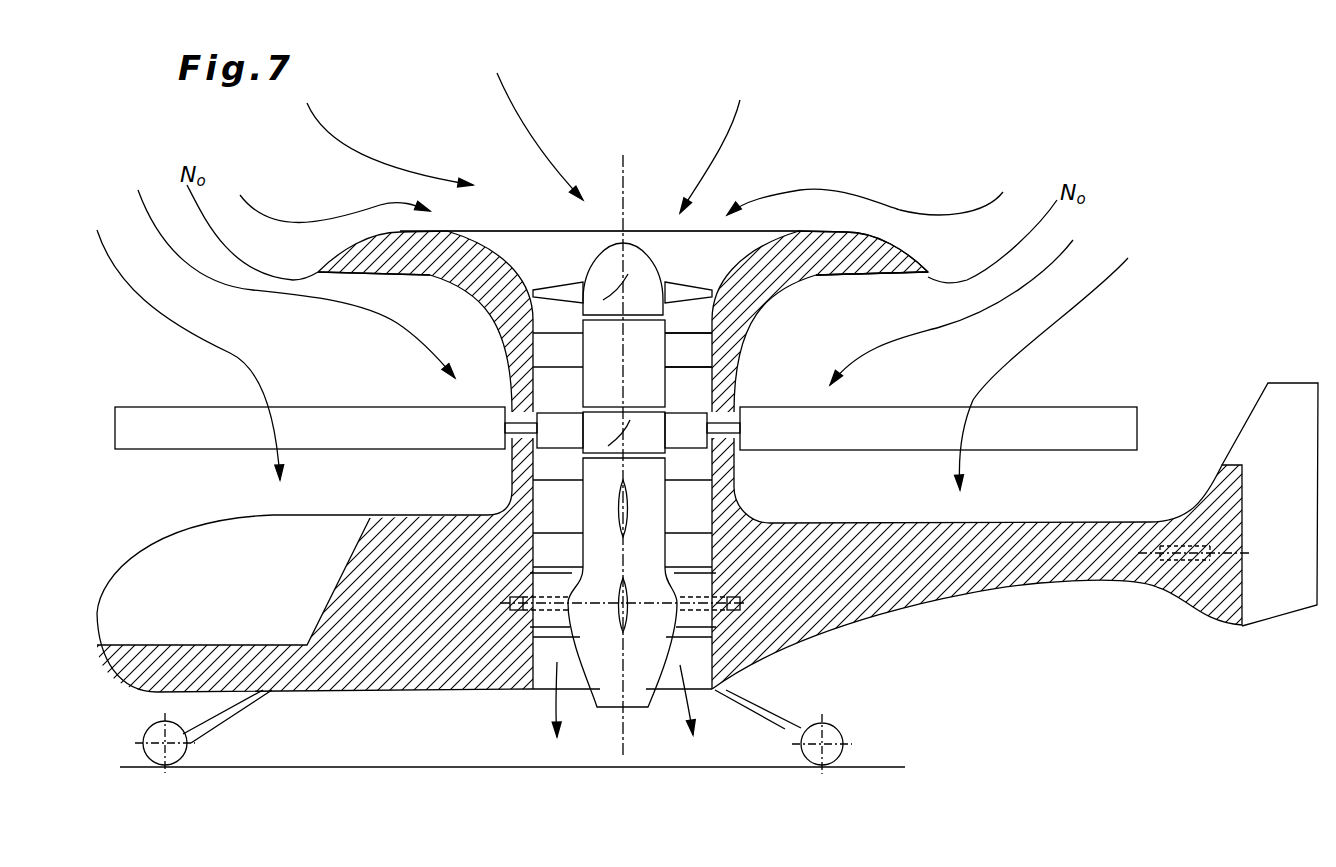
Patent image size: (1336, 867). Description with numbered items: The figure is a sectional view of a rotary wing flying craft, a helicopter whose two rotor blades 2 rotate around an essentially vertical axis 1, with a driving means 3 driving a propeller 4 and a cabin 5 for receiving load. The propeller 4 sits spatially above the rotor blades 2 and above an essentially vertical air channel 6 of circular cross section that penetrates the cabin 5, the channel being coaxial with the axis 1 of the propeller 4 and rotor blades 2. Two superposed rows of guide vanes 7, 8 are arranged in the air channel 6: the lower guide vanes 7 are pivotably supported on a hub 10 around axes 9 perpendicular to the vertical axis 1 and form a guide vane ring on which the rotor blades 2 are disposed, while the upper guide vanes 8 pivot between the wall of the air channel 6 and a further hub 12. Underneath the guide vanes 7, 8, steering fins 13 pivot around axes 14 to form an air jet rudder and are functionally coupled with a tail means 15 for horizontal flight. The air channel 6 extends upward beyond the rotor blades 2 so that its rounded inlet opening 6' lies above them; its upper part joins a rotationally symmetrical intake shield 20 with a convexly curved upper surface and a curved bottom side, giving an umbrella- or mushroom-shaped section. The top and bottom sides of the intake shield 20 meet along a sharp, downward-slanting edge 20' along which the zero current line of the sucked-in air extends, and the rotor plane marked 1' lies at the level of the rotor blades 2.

The essentially vertical axis 1 is at (655, 434).
The rotor blade plane 1' is at (1034, 374).
The rotor blades 2 is at (1095, 420).
The driving means 3 is at (645, 503).
The propeller 4 is at (700, 289).
The cabin 5 is at (910, 573).
The air channel 6 is at (623, 460).
The inlet opening 6' is at (623, 198).
The guide vanes 7 is at (518, 452).
The guide vanes 8 is at (693, 347).
The axes 9 is at (727, 425).
The hub 10 is at (642, 443).
The further hub 12 is at (612, 350).
The steering fins 13 is at (548, 622).
The axes 14 is at (703, 611).
The tail means 15 is at (1278, 585).
The intake shield 20 is at (875, 202).
The edge 20' is at (630, 253).